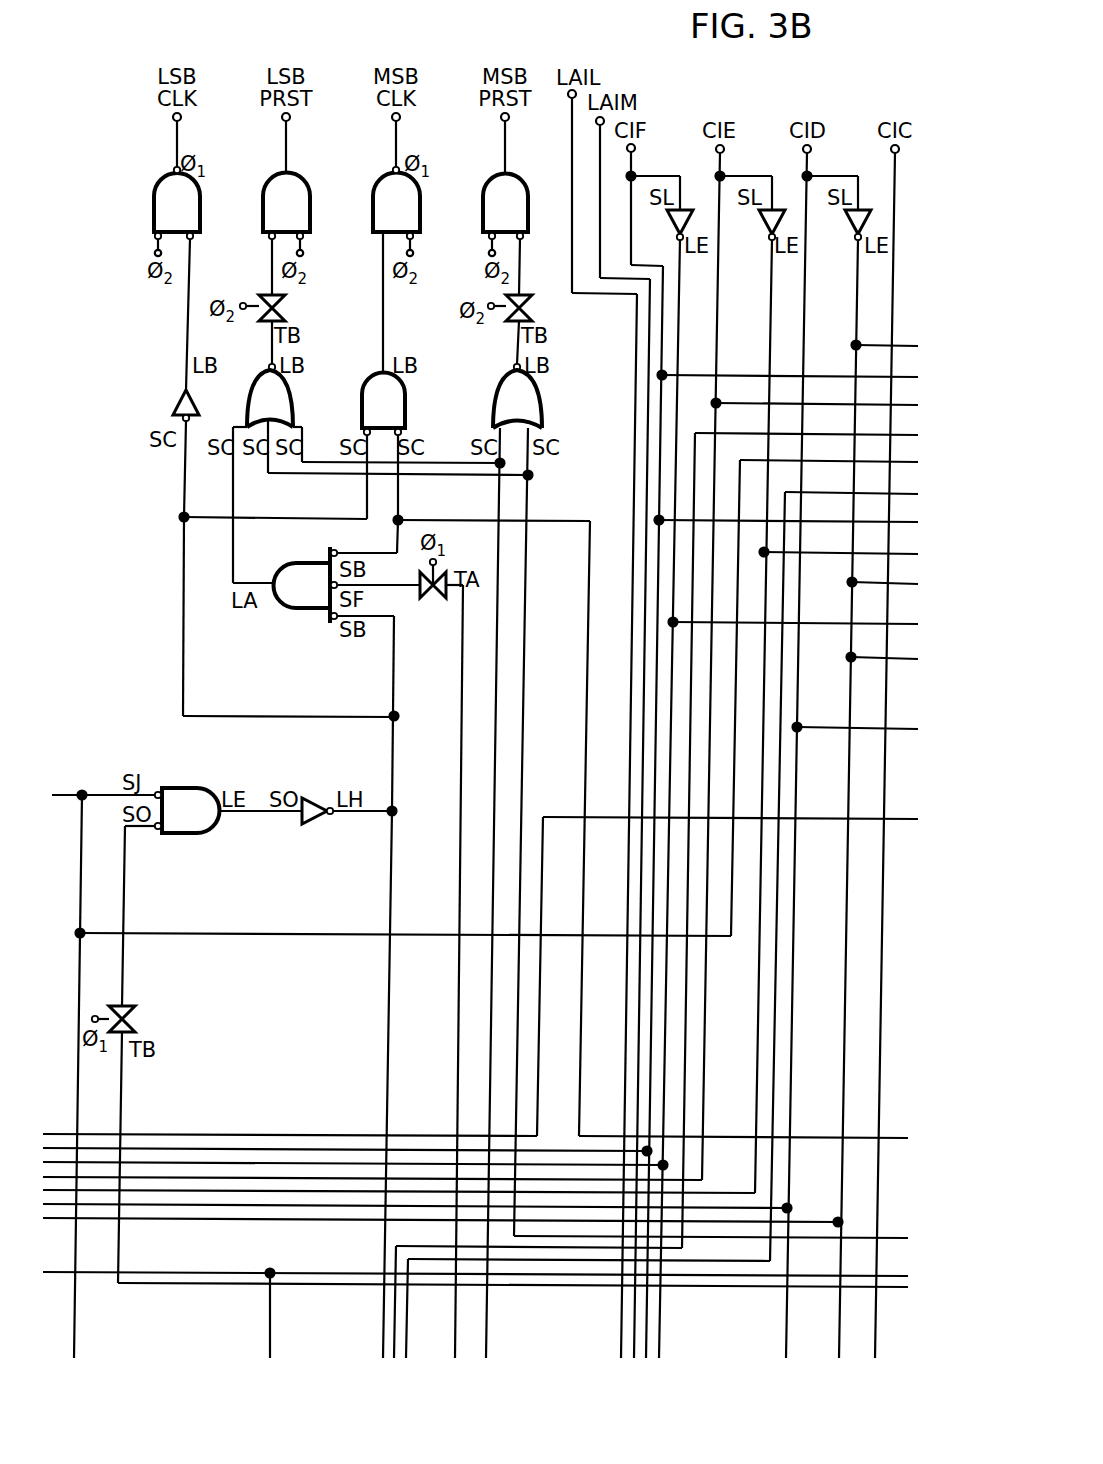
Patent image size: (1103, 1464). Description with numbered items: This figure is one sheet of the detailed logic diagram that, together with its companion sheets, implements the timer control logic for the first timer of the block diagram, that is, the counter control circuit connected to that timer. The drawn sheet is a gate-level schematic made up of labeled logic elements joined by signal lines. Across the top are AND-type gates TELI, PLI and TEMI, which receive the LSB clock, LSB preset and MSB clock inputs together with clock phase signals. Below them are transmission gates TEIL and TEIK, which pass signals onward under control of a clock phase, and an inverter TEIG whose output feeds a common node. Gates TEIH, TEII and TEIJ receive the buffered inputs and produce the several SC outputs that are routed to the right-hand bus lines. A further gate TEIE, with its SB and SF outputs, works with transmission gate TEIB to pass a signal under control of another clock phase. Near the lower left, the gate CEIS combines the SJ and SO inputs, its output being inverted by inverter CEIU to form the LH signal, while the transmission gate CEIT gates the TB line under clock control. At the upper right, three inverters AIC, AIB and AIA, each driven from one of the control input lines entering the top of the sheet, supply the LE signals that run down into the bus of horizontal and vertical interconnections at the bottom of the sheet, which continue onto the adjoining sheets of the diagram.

The LSB clock AND gate TELI is at (149, 203).
The LSB preset AND gate PLI is at (267, 206).
The MSB clock AND gate TEMI is at (369, 203).
The transmission gate TEIL is at (287, 310).
The transmission gate TEIK is at (538, 309).
The inverter TEIG is at (158, 405).
The OR gate TEIH is at (295, 395).
The AND gate TEII is at (405, 403).
The OR gate TEIJ is at (538, 396).
The AND gate TEIE is at (288, 580).
The transmission gate TEIB is at (429, 593).
The AND gate CEIS is at (187, 799).
The inverter CEIU is at (317, 795).
The transmission gate CEIT is at (140, 1019).
The inverter AIC is at (667, 220).
The inverter AIB is at (758, 220).
The inverter AIA is at (846, 220).